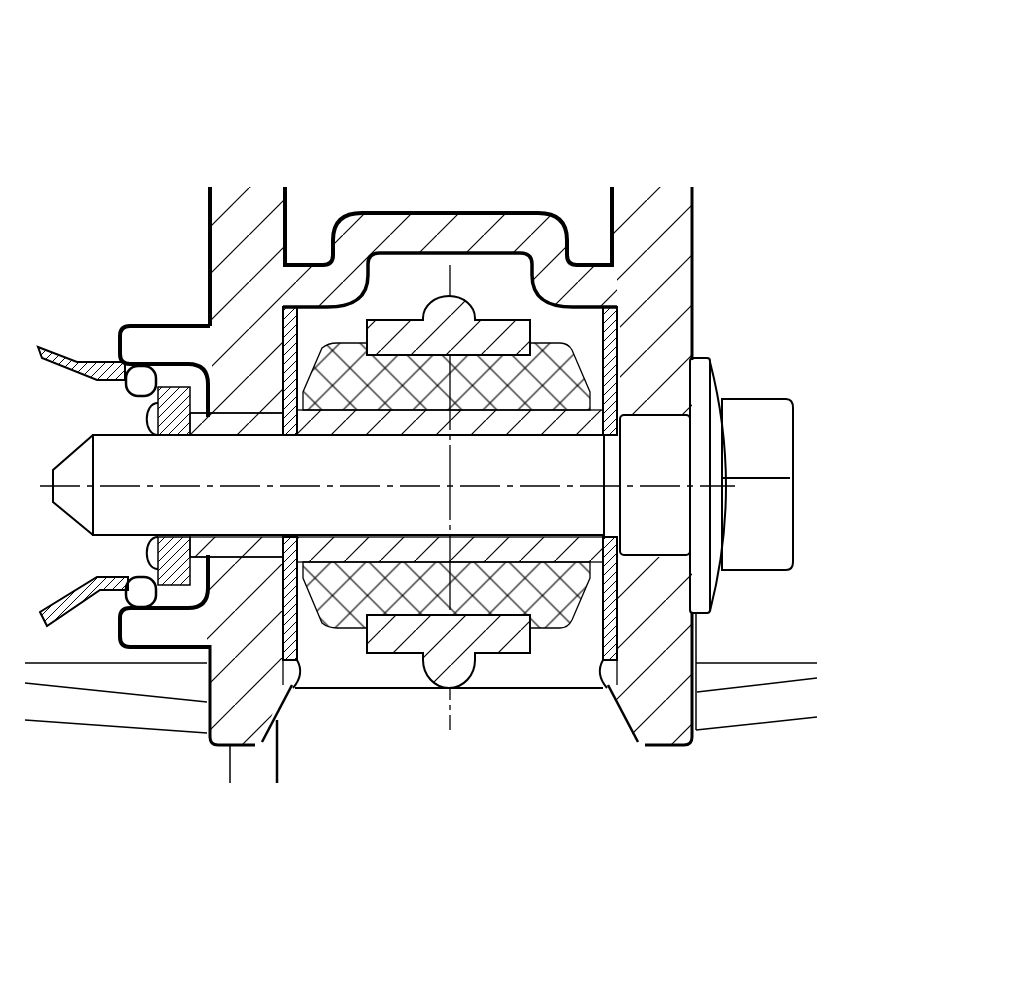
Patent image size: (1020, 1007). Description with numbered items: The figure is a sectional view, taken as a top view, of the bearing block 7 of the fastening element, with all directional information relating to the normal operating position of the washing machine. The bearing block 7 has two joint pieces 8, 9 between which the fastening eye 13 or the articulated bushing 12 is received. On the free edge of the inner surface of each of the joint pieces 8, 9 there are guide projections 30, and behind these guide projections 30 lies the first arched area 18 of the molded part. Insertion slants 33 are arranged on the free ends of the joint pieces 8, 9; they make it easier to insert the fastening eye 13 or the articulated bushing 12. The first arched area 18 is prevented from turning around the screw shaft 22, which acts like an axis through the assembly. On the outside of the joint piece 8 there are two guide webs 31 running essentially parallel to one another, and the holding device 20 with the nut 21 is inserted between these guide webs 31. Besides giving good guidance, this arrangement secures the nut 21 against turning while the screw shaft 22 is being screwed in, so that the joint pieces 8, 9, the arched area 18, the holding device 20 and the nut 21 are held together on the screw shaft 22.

The bearing block 7 is at (795, 160).
The joint piece 8 is at (238, 337).
The joint piece 9 is at (655, 357).
The articulated bushing 12 is at (548, 437).
The fastening eye 13 is at (443, 332).
The first arched area 18 is at (296, 315).
The holding device 20 is at (133, 326).
The nut 21 is at (175, 390).
The screw shaft 22 is at (493, 465).
The guide projections 30 is at (297, 690).
The guide webs 31 is at (162, 347).
The insertion slants 33 is at (287, 705).